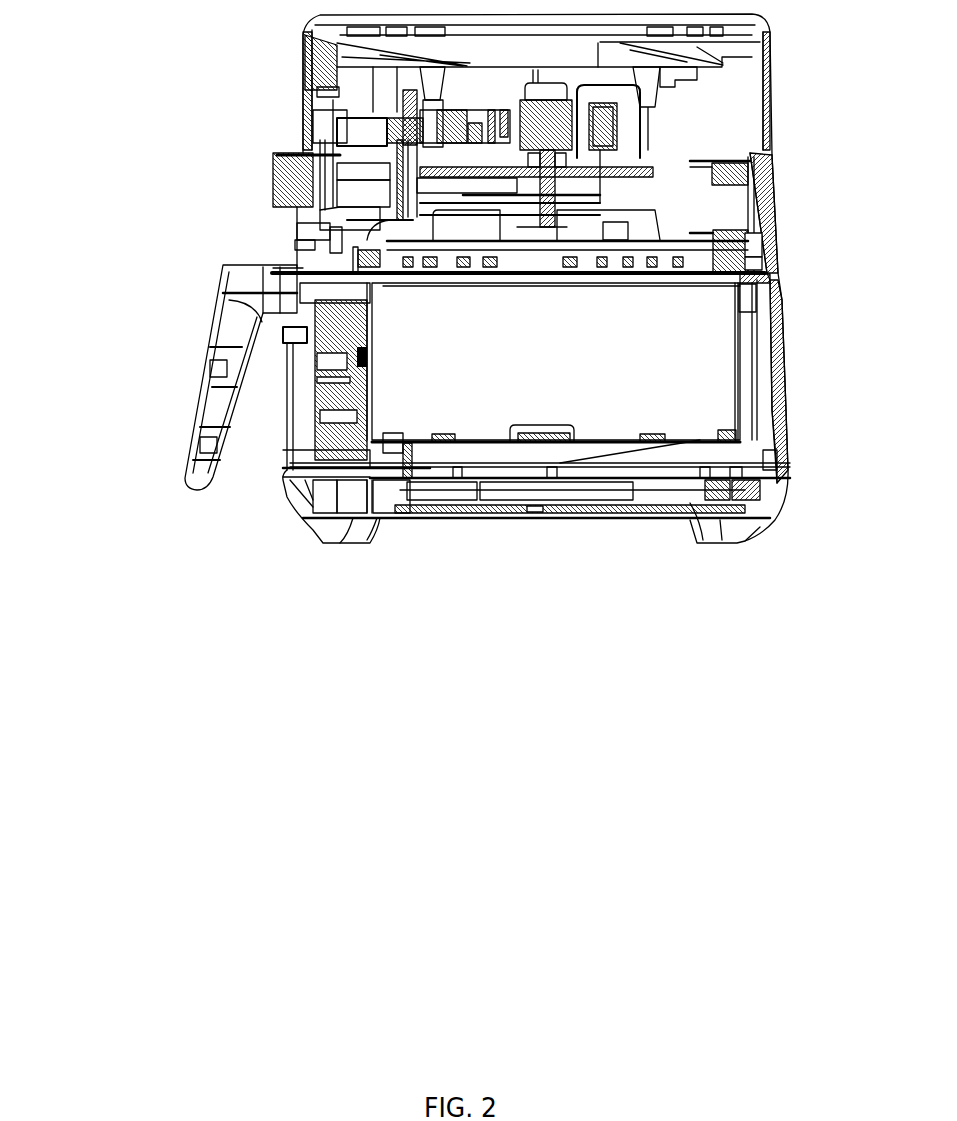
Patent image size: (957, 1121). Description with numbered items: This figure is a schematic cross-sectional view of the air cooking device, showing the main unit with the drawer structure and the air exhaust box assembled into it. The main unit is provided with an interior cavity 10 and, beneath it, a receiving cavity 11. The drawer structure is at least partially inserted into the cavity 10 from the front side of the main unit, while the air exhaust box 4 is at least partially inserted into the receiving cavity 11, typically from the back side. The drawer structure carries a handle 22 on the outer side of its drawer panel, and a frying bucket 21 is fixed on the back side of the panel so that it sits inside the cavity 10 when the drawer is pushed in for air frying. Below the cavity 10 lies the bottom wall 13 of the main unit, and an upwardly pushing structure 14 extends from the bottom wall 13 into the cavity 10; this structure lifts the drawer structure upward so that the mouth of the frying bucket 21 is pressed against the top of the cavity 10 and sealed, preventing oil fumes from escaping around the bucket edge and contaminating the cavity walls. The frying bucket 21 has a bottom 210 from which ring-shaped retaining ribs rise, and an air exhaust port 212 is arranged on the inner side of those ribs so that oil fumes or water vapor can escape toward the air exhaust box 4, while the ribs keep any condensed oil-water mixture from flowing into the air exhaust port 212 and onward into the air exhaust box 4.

The cavity 10 is at (747, 387).
The handle 22 is at (197, 373).
The frying bucket 21 is at (745, 334).
The bottom 210 is at (500, 440).
The air exhaust port 212 is at (428, 443).
The bottom wall 13 is at (580, 463).
The upwardly pushing structure 14 is at (682, 455).
The air exhaust box 4 is at (495, 508).
The receiving cavity 11 is at (372, 518).